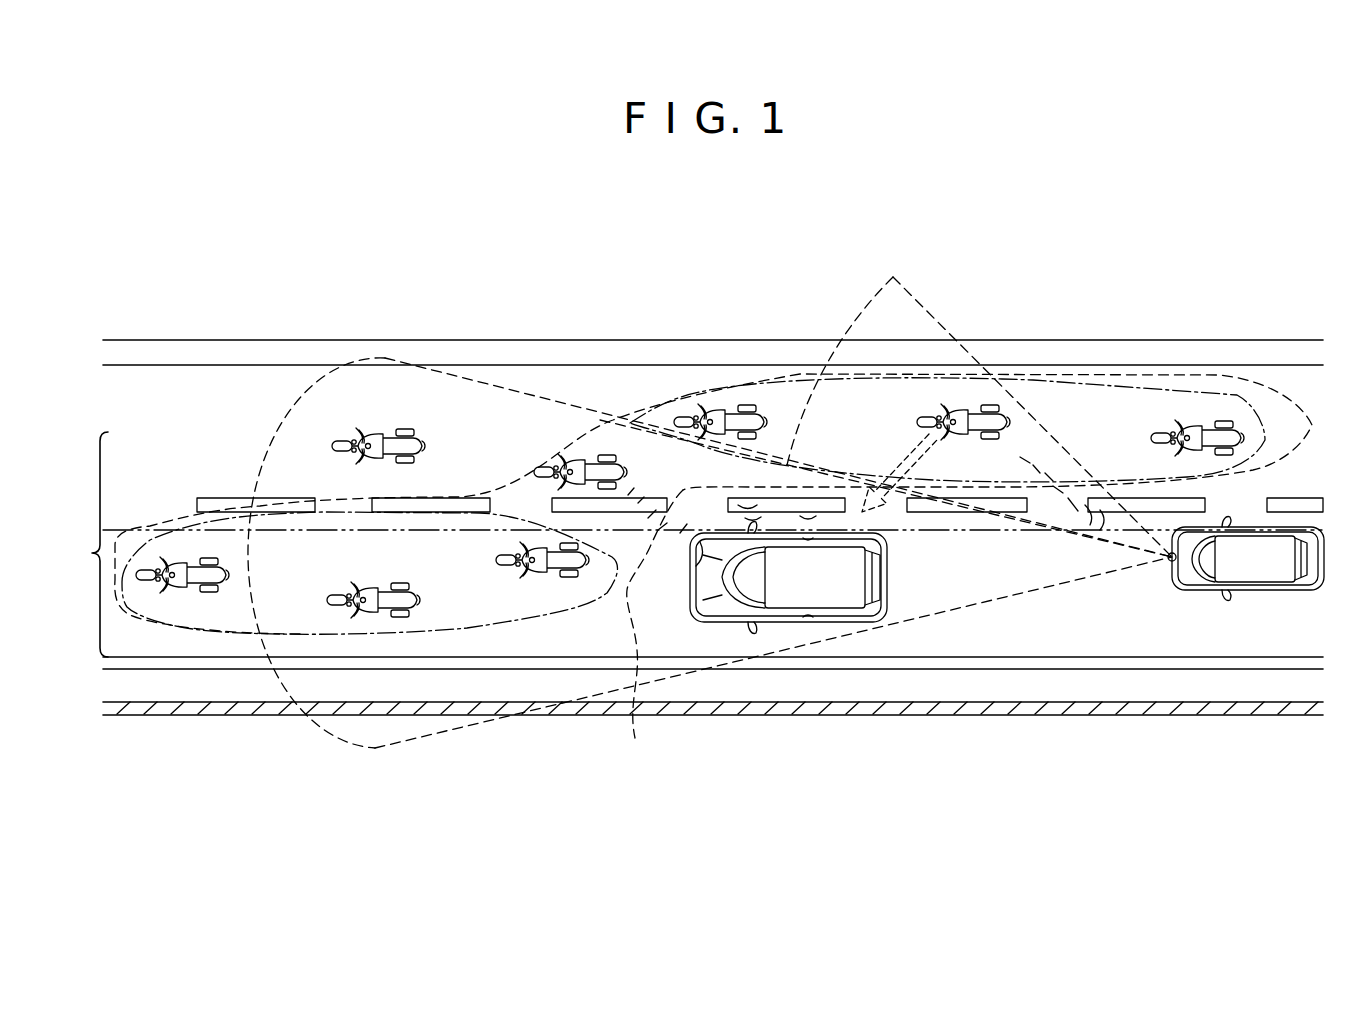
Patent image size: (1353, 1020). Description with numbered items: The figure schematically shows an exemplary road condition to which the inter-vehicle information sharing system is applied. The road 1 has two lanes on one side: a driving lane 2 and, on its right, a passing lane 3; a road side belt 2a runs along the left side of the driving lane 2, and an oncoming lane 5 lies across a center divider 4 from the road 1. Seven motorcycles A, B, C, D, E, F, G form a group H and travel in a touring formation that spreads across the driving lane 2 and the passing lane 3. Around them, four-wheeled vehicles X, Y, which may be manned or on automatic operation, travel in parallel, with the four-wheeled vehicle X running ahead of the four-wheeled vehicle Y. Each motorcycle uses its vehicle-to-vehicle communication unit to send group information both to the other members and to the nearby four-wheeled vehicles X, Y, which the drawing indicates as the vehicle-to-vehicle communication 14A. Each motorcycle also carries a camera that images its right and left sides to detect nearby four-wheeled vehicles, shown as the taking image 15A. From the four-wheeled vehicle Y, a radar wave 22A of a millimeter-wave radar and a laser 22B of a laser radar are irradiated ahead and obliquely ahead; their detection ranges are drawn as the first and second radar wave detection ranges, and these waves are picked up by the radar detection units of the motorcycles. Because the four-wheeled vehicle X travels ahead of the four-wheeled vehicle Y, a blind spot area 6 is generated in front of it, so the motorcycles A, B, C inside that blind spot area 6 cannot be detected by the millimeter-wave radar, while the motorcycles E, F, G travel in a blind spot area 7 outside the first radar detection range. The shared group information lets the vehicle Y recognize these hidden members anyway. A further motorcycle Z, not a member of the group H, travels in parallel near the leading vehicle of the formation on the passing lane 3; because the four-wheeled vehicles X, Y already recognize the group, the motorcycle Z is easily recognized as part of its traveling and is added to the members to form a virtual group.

The road 1 is at (90, 544).
The driving lane 2 is at (127, 640).
The road side belt 2a is at (1128, 685).
The passing lane 3 is at (127, 463).
The center divider 4 is at (598, 340).
The oncoming lane 5 is at (545, 271).
The blind spot area 6 is at (193, 618).
The blind spot area 7 is at (680, 395).
The vehicle-to-vehicle communication 14A is at (752, 482).
The taking image 15A is at (905, 455).
The radar wave 22A is at (455, 740).
The laser 22B is at (930, 312).
The group H is at (655, 630).
The four-wheeled vehicle X is at (807, 586).
The four-wheeled vehicle Y is at (1250, 571).
The motorcycle A is at (182, 564).
The motorcycle B is at (373, 588).
The motorcycle C is at (533, 555).
The motorcycle D is at (580, 461).
The motorcycle E is at (720, 411).
The motorcycle F is at (963, 411).
The motorcycle G is at (1197, 424).
The motorcycle Z is at (378, 433).